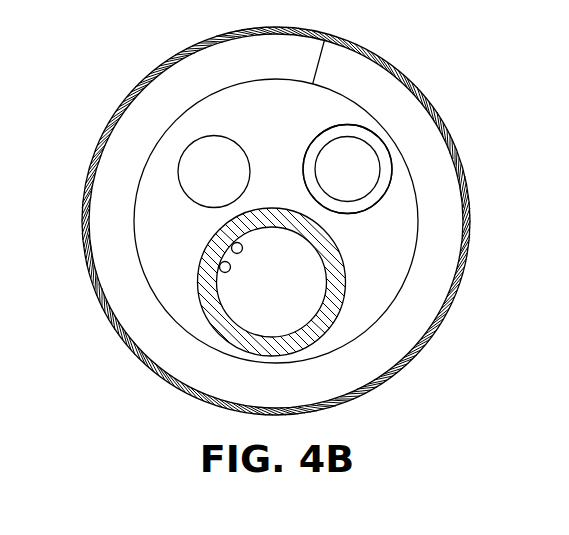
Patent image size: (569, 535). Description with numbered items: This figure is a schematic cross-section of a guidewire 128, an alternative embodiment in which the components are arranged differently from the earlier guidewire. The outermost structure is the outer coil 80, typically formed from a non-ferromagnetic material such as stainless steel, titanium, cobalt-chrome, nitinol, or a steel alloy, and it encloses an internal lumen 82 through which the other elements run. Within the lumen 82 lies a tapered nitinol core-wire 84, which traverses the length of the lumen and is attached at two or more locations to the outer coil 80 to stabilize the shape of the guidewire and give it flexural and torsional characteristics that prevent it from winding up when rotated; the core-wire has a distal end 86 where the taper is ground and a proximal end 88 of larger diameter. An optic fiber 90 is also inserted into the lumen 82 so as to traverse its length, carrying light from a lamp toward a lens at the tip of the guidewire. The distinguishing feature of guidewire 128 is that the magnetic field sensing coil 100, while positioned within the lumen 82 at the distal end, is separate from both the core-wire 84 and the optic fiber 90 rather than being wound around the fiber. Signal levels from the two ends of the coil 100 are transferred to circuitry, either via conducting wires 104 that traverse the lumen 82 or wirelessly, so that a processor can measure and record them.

The outer coil 80 is at (463, 165).
The internal lumen 82 is at (391, 255).
The core-wire 84 is at (357, 163).
The distal end 86 is at (363, 142).
The proximal end 88 is at (391, 177).
The optic fiber 90 is at (181, 183).
The magnetic field sensing coil 100 is at (333, 323).
The conducting wires 104 is at (222, 245).
The guidewire 128 is at (465, 268).